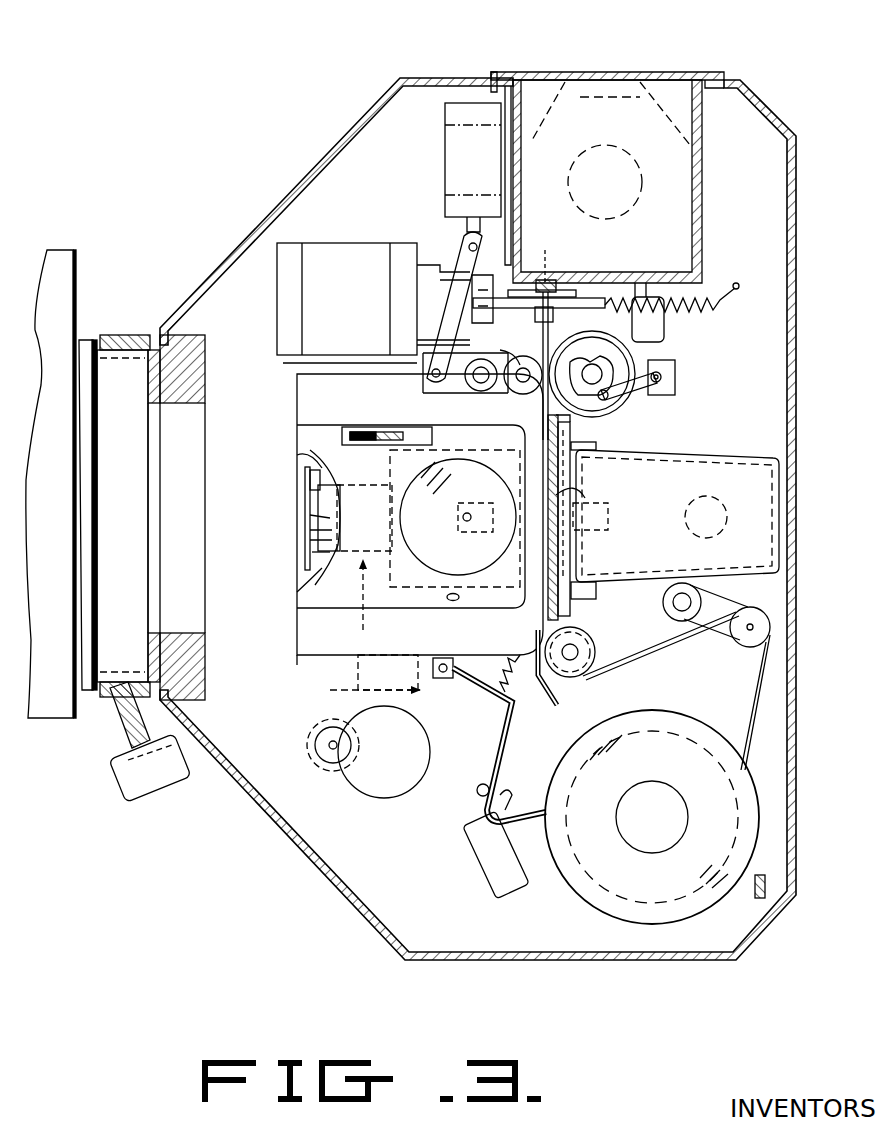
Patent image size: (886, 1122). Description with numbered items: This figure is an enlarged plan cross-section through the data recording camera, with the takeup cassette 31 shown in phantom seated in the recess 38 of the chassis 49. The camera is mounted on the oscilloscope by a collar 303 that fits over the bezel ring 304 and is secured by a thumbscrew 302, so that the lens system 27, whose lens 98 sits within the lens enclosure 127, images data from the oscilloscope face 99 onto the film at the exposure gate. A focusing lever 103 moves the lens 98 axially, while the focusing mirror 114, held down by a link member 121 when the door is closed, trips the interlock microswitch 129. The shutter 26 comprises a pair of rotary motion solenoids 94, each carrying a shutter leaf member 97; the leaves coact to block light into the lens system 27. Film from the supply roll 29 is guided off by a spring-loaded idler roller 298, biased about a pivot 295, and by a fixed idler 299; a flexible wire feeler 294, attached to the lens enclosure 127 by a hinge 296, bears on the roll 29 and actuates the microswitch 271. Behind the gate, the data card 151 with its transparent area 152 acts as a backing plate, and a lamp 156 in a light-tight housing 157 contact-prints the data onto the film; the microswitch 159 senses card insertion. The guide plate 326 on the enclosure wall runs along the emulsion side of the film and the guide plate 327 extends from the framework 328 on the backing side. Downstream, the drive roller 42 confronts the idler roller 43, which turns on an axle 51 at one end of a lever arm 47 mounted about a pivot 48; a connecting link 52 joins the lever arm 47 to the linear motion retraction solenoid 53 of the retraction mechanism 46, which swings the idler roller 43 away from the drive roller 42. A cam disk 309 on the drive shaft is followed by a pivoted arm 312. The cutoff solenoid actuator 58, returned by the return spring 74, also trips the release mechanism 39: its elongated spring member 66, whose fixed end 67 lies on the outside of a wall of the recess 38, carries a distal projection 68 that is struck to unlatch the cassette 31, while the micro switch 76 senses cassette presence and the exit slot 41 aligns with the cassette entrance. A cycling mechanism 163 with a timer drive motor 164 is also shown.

The fixed end of spring member 67 is at (492, 78).
The takeup cassette 31 is at (598, 95).
The recess 38 is at (680, 95).
The chassis 49 is at (352, 160).
The linear motion retraction solenoid 53 is at (450, 140).
The retraction mechanism 46 is at (425, 198).
The elongated spring member 66 is at (511, 170).
The solenoid actuator 58 is at (330, 248).
The release mechanism 39 is at (462, 233).
The exit slot 41 is at (552, 275).
The projection 68 is at (420, 282).
The collar 303 is at (133, 338).
The connecting link 52 is at (417, 338).
The return spring 74 is at (707, 305).
The micro switch 76 is at (664, 330).
The guide plate 326 is at (546, 322).
The guide plate 327 is at (548, 318).
The axle 51 is at (502, 348).
The cam disk 309 is at (675, 366).
The pivoted arm 312 is at (662, 393).
The lever arm 47 is at (448, 388).
The pivot 48 is at (478, 392).
The idler roller 43 is at (517, 394).
The drive roller 42 is at (618, 402).
The face of the oscilloscope 99 is at (80, 485).
The focusing lever 103 is at (378, 430).
The data card 151 is at (570, 432).
The light-tight housing 157 is at (706, 458).
The rotary motion solenoids 94 is at (322, 516).
The microswitch 129 is at (405, 478).
The framework 328 is at (570, 450).
The shutter 26 is at (295, 507).
The transparent area 152 is at (590, 498).
The lamp 156 is at (716, 503).
The shutter leaf member 97 is at (330, 532).
The microswitch 159 is at (610, 527).
The lens 98 is at (330, 547).
The lens system 27 is at (356, 620).
The link member 121 is at (436, 622).
The focusing mirror 114 is at (452, 600).
The pivot 295 is at (662, 613).
The spring-loaded idler roller 298 is at (744, 648).
The fixed idler 299 is at (580, 670).
The lens enclosure 127 is at (332, 660).
The hinge 296 is at (443, 680).
The cycling mechanism 163 is at (335, 790).
The timer drive motor 164 is at (405, 785).
The flexible wire feeler 294 is at (536, 800).
The microswitch 271 is at (474, 862).
The supply roll 29 is at (585, 902).
The bezel ring 304 is at (105, 700).
The thumbscrew 302 is at (128, 793).